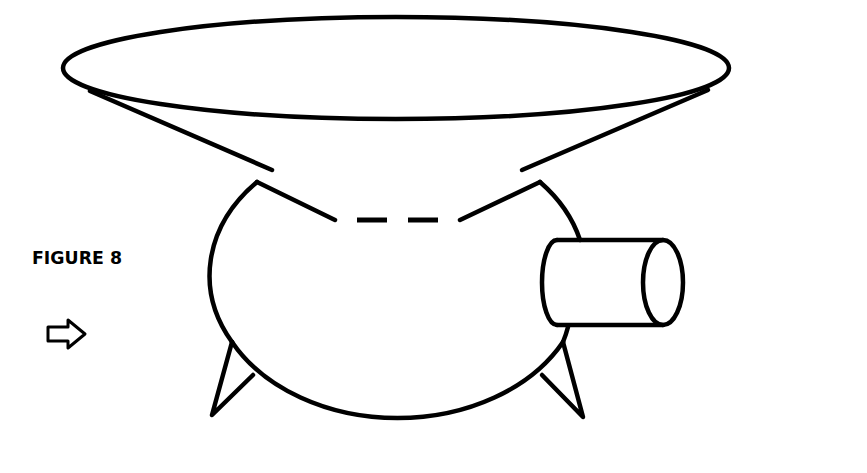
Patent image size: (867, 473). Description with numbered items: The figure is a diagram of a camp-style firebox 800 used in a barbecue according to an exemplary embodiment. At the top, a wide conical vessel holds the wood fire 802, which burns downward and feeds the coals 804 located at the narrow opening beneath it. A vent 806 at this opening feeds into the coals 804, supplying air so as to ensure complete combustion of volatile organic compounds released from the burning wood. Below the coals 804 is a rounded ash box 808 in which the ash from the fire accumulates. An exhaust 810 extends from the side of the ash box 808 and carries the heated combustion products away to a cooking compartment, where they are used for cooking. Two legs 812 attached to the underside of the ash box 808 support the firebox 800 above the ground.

The camp-style firebox 800 is at (314, 265).
The wood fire 802 is at (396, 93).
The coals 804 is at (423, 196).
The vent 806 is at (329, 191).
The ash box 808 is at (397, 380).
The exhaust 810 is at (652, 311).
The legs 812 is at (390, 398).